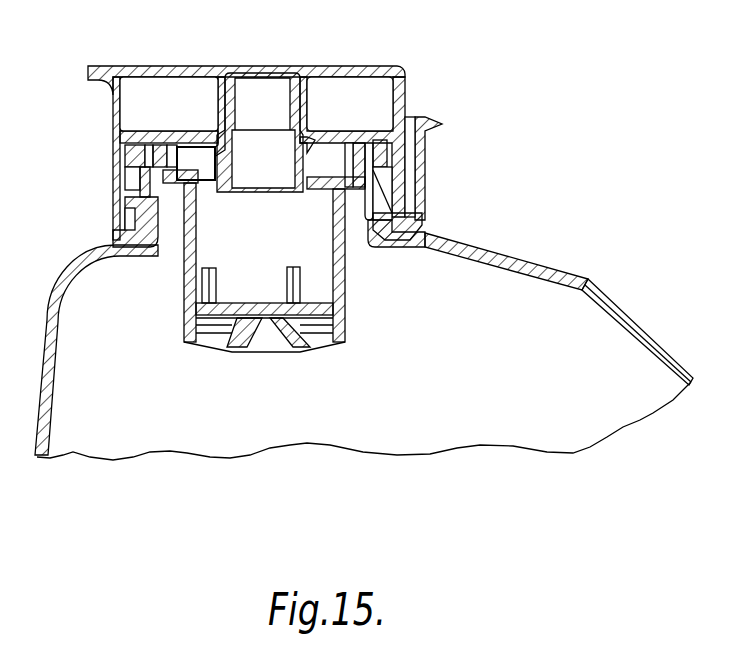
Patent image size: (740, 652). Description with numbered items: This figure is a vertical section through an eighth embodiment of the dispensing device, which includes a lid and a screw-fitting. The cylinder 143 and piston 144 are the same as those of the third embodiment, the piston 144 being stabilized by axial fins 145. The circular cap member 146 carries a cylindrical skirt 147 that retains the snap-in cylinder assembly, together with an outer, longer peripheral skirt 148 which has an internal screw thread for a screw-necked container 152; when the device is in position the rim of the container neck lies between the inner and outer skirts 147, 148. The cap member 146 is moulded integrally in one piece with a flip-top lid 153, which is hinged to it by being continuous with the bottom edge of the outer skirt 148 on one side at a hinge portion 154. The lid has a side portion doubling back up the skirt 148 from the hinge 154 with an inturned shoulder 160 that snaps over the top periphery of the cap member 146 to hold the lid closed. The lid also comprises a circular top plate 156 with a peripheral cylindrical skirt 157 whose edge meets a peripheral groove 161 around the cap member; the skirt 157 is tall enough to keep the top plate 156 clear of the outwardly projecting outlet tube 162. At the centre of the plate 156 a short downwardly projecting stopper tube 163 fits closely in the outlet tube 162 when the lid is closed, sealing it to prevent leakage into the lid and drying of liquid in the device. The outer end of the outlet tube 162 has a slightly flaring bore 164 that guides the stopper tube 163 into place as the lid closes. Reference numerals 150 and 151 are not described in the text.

The cylinder 143 is at (346, 300).
The piston 144 is at (198, 328).
The axial fins 145 is at (203, 286).
The circular cap member 146 is at (350, 155).
The cylindrical skirt 147 is at (380, 177).
The outer peripheral skirt 148 is at (120, 185).
The latch member 150 is at (128, 203).
The container body wall 151 is at (146, 223).
The screw-necked container 152 is at (532, 268).
The flip-top lid 153 is at (358, 66).
The hinge portion 154 is at (420, 232).
The circular top plate 156 is at (178, 67).
The peripheral cylindrical skirt 157 is at (112, 107).
The inturned shoulder 160 is at (424, 117).
The peripheral groove 161 is at (113, 145).
The outlet tube 162 is at (307, 100).
The stopper tube 163 is at (272, 72).
The flaring bore 164 is at (224, 90).